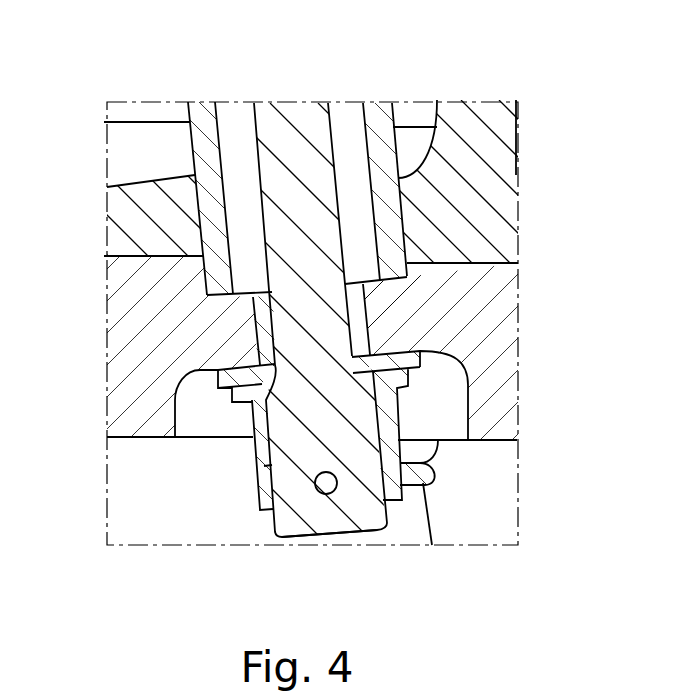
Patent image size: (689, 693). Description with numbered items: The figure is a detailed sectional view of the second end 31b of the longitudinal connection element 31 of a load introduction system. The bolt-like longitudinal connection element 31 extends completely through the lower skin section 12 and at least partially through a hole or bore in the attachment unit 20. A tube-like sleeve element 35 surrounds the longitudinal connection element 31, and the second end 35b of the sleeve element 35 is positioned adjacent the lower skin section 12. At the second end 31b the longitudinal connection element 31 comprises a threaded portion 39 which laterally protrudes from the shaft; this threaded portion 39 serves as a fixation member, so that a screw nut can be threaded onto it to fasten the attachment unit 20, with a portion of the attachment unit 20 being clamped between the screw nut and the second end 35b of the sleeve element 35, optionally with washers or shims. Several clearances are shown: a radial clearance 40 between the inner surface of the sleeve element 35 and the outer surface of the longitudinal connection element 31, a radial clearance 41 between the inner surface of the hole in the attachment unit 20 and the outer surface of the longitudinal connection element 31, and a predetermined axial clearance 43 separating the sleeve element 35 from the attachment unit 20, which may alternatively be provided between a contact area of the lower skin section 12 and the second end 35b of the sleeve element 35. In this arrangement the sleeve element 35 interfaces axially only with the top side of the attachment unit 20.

The lower skin section 12 is at (123, 218).
The attachment unit 20 is at (493, 368).
The longitudinal connection element 31 is at (288, 123).
The second end of the longitudinal connection element 31b is at (389, 543).
The sleeve element 35 is at (380, 123).
The second end of the sleeve element 35b is at (408, 208).
The threaded portion 39 is at (298, 505).
The radial clearance 40 is at (232, 128).
The radial clearance 41 is at (268, 327).
The axial clearance 43 is at (411, 275).